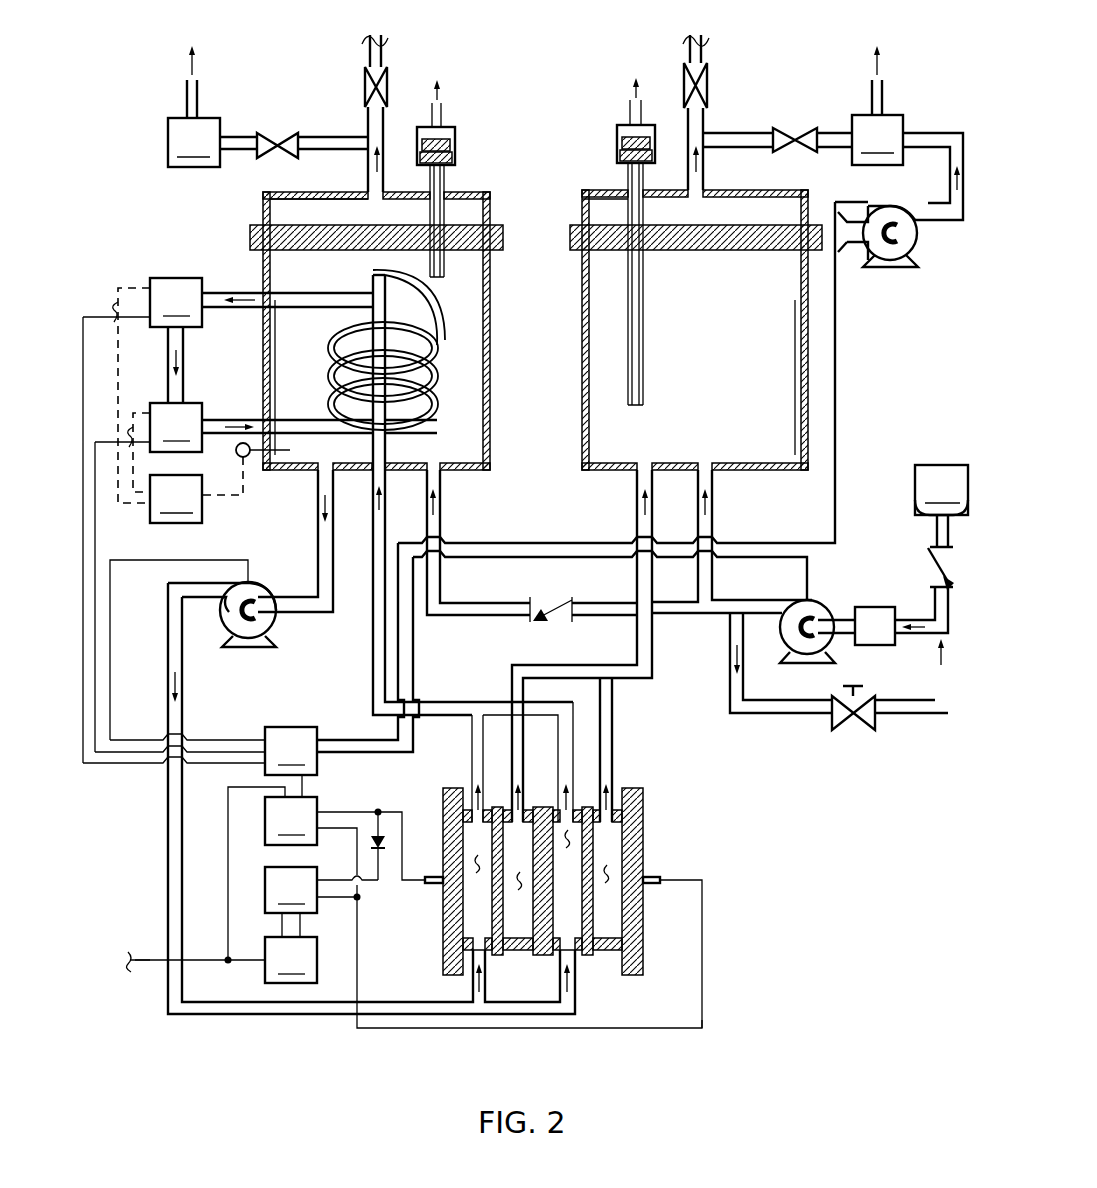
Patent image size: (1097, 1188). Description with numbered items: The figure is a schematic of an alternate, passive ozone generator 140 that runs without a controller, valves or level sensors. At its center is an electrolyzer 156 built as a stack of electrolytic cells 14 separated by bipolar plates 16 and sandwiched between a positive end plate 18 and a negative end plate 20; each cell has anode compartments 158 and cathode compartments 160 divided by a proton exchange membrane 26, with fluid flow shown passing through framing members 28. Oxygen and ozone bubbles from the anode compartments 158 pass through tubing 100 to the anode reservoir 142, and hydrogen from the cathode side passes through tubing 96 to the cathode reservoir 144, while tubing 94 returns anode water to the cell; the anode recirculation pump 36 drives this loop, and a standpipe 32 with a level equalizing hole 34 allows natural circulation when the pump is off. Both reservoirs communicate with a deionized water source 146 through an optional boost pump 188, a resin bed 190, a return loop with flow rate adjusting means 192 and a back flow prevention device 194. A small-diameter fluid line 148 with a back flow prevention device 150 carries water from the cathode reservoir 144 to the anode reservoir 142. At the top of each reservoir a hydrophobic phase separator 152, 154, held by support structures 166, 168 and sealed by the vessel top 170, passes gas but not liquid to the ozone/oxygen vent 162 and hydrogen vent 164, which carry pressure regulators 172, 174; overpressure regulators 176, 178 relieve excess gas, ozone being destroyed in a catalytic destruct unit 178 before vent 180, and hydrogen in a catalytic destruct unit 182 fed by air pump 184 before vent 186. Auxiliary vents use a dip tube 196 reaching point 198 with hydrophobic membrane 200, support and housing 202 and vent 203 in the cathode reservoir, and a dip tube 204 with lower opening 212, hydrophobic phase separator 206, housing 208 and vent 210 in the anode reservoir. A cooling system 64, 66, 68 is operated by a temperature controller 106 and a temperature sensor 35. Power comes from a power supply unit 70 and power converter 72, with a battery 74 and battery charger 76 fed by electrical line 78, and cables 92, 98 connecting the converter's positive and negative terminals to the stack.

The ozone generator 140 is at (923, 60).
The anode reservoir 142 is at (263, 372).
The cathode reservoir 144 is at (582, 372).
The deionized water source 146 is at (941, 506).
The fluid line 148 is at (492, 618).
The back flow prevention device 150 is at (572, 600).
The hydrophobic phase separator 152 is at (280, 250).
The hydrophobic phase separator 154 is at (650, 252).
The electrolyzer 156 is at (643, 775).
The anode compartment 158 is at (525, 878).
The cathode compartment 160 is at (612, 870).
The ozone/oxygen vent 162 is at (438, 118).
The hydrogen vent 164 is at (670, 122).
The support structure 166 is at (338, 228).
The support structure 168 is at (658, 228).
The vessel top 170 is at (285, 222).
The pressure regulator 172 is at (366, 75).
The pressure regulator 174 is at (712, 80).
The overpressure regulator 176 is at (285, 133).
The catalytic destruct unit 178 is at (775, 128).
The vent 180 is at (185, 105).
The catalytic destruct unit 182 is at (877, 140).
The air pump 184 is at (888, 268).
The vent 186 is at (893, 95).
The boost pump 188 is at (812, 660).
The resin bed 190 is at (888, 607).
The flow rate adjusting means 192 is at (850, 718).
The back flow prevention device 194 is at (925, 548).
The dip tube 196 is at (628, 395).
The point 198 is at (640, 418).
The hydrophobic membrane 200 is at (614, 150).
The support and housing 202 is at (617, 140).
The vent 203 is at (615, 112).
The dip tube 204 is at (446, 262).
The hydrophobic phase separator 206 is at (456, 162).
The housing 208 is at (456, 140).
The vent 210 is at (458, 112).
The lower opening 212 is at (440, 282).
The standpipe 32 is at (395, 280).
The level equalizing hole 34 is at (390, 452).
The temperature sensor 35 is at (248, 460).
The anode recirculation pump 36 is at (263, 637).
The cooling system 64 is at (330, 380).
The cooling system 66 is at (261, 340).
The cooling system 68 is at (293, 427).
The power supply unit 70 is at (200, 760).
The power converter 72 is at (483, 912).
The battery 74 is at (321, 890).
The battery charger 76 is at (225, 948).
The electrical line 78 is at (150, 962).
The cable 92 is at (385, 810).
The tubing 94 is at (230, 1015).
The tubing 96 is at (648, 682).
The cable 98 is at (700, 960).
The tubing 100 is at (373, 696).
The temperature controller 106 is at (163, 525).
The electrolytic cell 14 is at (504, 960).
The bipolar plate 16 is at (553, 880).
The positive end plate 18 is at (442, 940).
The negative end plate 20 is at (640, 815).
The proton exchange membrane 26 is at (593, 917).
The framing member 28 is at (600, 955).